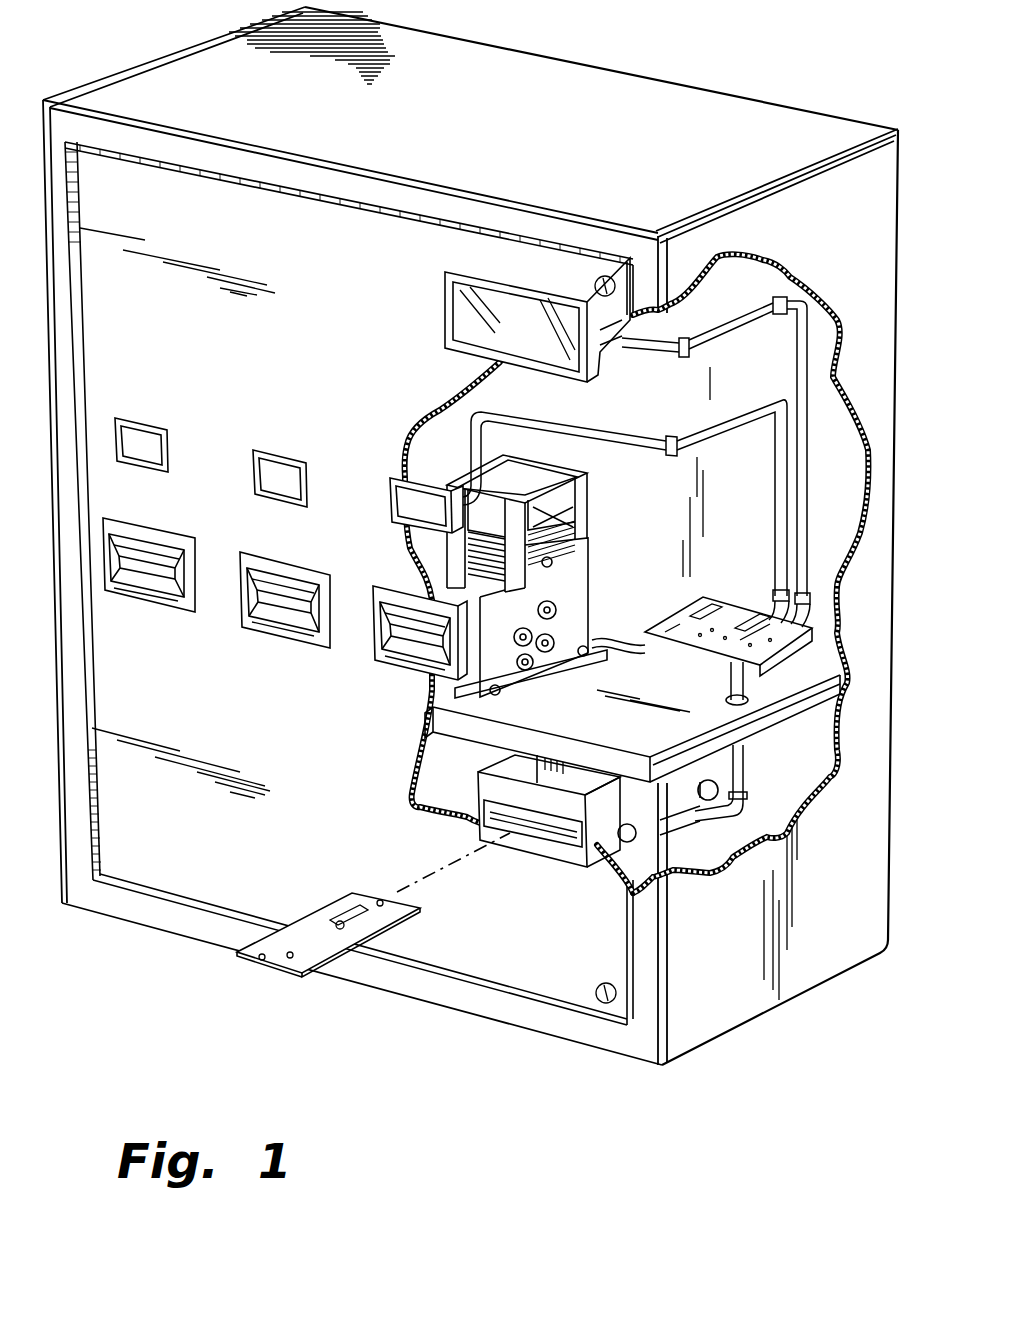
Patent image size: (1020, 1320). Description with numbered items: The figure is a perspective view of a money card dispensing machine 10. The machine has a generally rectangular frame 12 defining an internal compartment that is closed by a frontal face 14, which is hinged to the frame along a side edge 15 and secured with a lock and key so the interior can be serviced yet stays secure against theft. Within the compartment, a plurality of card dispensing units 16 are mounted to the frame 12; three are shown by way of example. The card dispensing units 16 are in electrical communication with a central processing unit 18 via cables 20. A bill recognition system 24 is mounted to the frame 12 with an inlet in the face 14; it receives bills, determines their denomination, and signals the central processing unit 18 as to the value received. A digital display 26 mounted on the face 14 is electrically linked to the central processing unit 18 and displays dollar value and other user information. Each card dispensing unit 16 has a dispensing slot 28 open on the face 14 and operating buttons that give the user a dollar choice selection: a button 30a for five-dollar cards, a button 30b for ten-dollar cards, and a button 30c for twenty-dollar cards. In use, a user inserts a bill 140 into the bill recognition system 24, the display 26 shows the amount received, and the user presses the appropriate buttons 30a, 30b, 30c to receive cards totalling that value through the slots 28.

The card dispensing machine 10 is at (442, 1033).
The frame 12 is at (718, 1003).
The frontal face 14 is at (463, 897).
The side edge 15 is at (100, 857).
The card dispensing unit 16 is at (578, 562).
The central processing unit 18 is at (738, 607).
The cables 20 is at (748, 415).
The bill recognition system 24 is at (543, 866).
The digital display 26 is at (498, 303).
The dispensing slot 28 is at (270, 633).
The $5 button 30a is at (117, 427).
The $10 button 30b is at (250, 455).
The $20 button 30c is at (392, 500).
The bill 140 is at (253, 967).